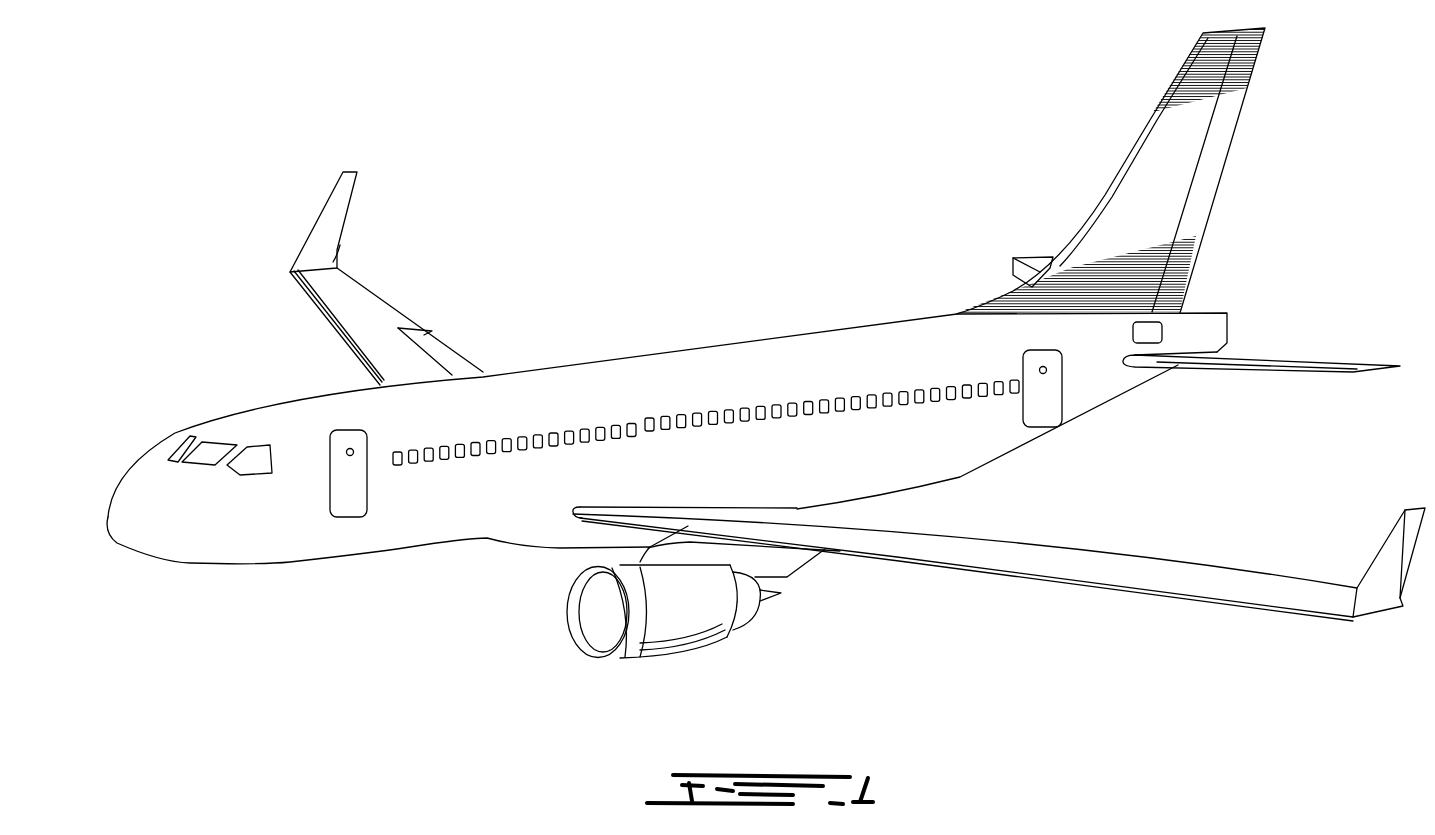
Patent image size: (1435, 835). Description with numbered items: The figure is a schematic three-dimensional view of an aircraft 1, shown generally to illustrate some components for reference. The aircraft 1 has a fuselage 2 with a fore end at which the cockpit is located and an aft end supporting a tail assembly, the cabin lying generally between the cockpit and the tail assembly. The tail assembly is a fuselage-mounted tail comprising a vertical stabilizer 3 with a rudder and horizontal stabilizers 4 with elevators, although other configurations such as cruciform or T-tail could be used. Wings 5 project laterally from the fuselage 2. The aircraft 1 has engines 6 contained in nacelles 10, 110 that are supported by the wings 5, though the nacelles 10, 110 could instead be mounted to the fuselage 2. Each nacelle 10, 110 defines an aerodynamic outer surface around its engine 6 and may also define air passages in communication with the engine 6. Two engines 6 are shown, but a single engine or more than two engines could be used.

The aircraft 1 is at (641, 262).
The fuselage 2 is at (425, 518).
The vertical stabilizer 3 is at (1148, 167).
The horizontal stabilizers 4 is at (1030, 270).
The wings 5 is at (372, 318).
The engines 6 is at (600, 617).
The nacelle 10 is at (1153, 333).
The nacelle 110 is at (718, 627).